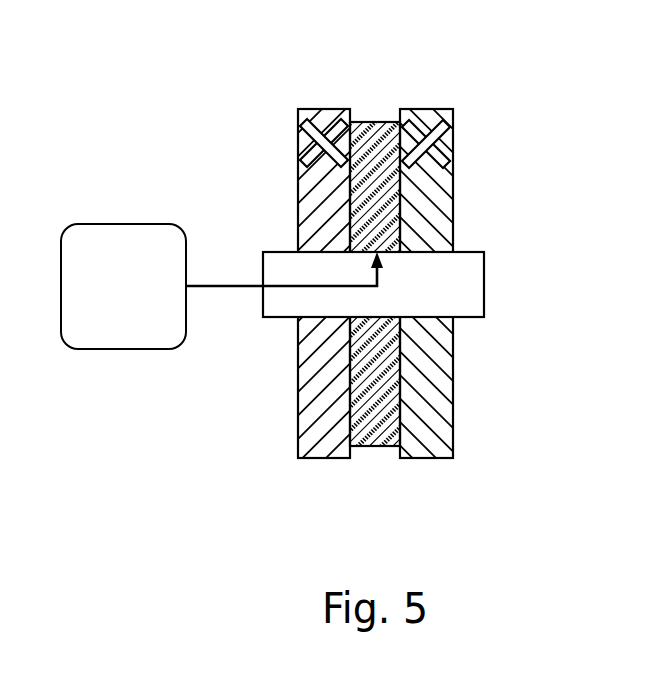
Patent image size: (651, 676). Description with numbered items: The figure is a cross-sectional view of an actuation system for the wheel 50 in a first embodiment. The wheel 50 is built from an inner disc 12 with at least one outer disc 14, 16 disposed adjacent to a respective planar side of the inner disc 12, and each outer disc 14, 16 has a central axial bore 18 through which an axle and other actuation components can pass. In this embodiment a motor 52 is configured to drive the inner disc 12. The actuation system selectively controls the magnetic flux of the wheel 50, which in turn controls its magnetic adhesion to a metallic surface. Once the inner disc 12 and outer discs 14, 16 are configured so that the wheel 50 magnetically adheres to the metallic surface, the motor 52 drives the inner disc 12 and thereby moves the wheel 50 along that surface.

The wheel 50 is at (252, 60).
The motor 52 is at (128, 224).
The central axial bore 18 is at (470, 279).
The outer disc 14 is at (323, 458).
The inner disc 12 is at (377, 446).
The outer disc 16 is at (423, 458).